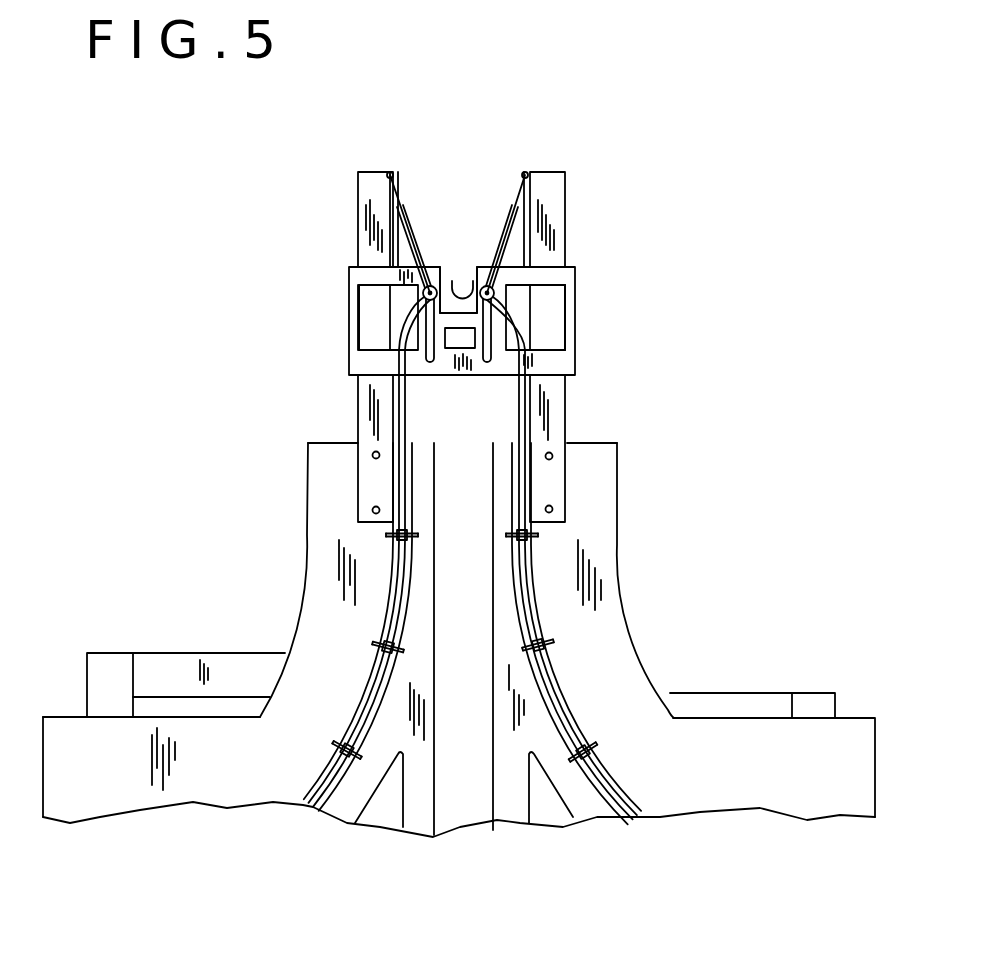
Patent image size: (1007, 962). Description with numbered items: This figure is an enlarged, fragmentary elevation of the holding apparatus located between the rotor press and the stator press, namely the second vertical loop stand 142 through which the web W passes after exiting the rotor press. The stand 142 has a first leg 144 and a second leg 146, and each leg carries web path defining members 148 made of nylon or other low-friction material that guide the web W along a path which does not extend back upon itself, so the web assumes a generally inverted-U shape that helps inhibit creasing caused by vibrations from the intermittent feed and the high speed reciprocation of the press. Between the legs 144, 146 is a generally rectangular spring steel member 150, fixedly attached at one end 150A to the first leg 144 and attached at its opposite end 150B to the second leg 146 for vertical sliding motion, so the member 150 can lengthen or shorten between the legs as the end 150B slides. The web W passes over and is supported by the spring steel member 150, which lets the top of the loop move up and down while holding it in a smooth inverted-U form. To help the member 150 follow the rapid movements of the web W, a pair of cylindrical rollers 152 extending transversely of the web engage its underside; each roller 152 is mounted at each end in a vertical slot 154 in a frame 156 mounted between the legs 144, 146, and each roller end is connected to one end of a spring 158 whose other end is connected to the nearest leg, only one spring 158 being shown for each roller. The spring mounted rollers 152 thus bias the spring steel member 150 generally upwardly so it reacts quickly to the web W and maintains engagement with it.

The second vertical loop stand 142 is at (606, 151).
The first leg 144 is at (307, 455).
The second leg 146 is at (620, 502).
The web path defining members 148 is at (676, 638).
The spring steel member 150 is at (455, 283).
The one end of spring steel member 150A is at (403, 443).
The opposite end of spring steel member 150B is at (513, 443).
The cylindrical rollers 152 is at (424, 287).
The vertical slot 154 is at (433, 322).
The frame 156 is at (575, 365).
The spring 158 is at (412, 244).
The web W is at (466, 283).